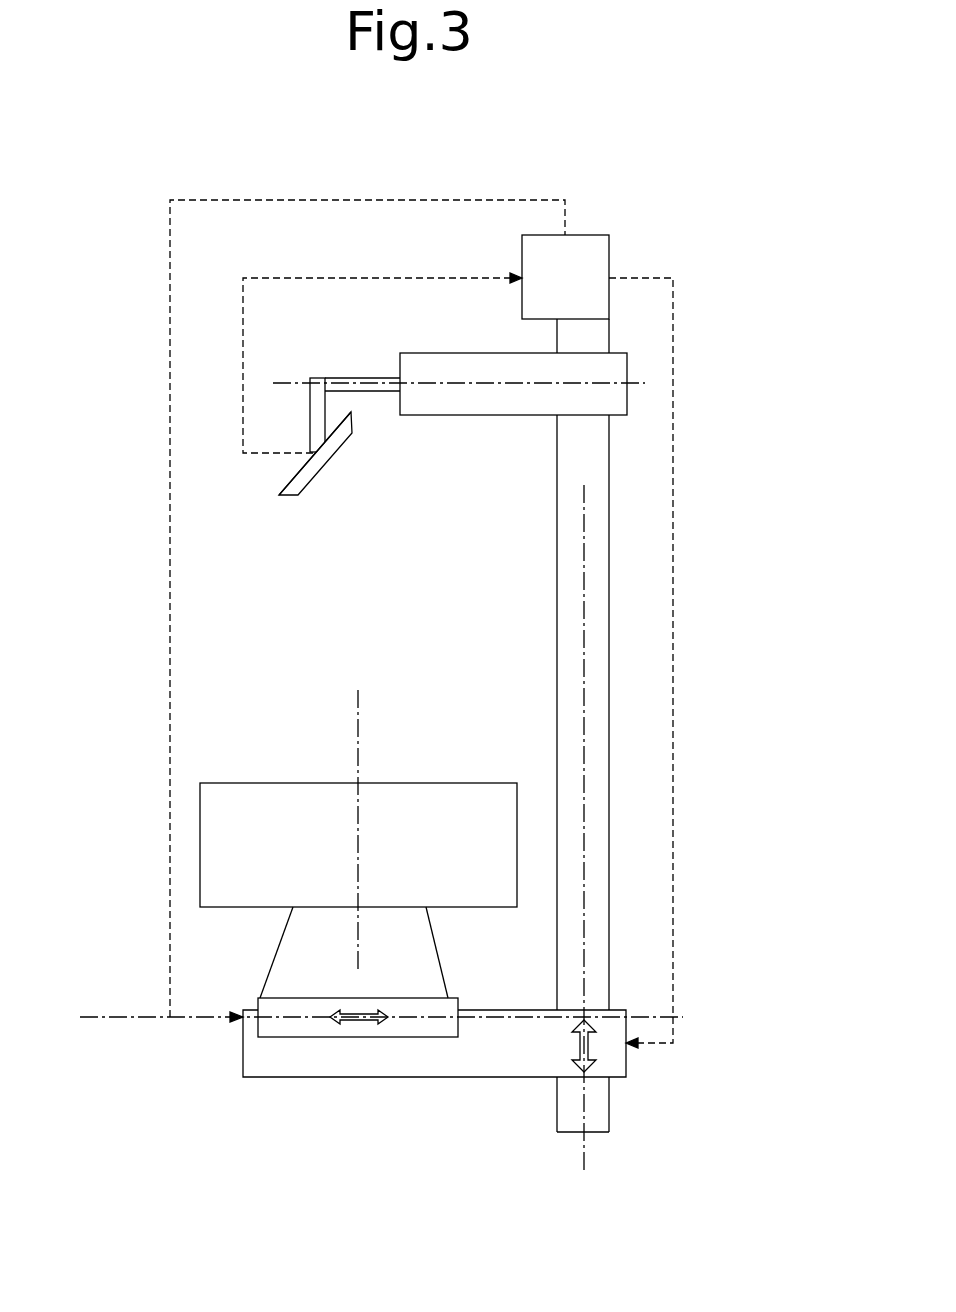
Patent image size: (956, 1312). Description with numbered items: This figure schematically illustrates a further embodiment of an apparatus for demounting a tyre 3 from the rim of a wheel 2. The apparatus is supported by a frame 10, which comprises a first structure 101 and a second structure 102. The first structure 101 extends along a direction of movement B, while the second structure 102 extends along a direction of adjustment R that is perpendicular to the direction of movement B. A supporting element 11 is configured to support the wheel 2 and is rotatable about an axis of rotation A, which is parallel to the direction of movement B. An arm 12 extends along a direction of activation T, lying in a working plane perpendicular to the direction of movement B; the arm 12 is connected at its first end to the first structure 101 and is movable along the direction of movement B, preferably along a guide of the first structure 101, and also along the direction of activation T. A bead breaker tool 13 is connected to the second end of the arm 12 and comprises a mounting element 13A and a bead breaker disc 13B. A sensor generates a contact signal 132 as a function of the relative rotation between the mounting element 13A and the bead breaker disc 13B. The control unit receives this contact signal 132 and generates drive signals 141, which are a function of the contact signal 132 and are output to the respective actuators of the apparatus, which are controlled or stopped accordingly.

The drive signals 141 is at (500, 200).
The contact signal 132 is at (347, 278).
The first structure 101 is at (597, 535).
The direction of movement B is at (585, 1152).
The arm 12 is at (489, 396).
The direction of activation T is at (280, 385).
The mounting element 13A is at (318, 400).
The bead breaker tool 13 is at (347, 451).
The bead breaker disc 13B is at (305, 477).
The tyre 3 is at (218, 800).
The axis of rotation A is at (358, 758).
The wheel 2 is at (236, 827).
The supporting element 11 is at (418, 957).
The second structure 102 is at (320, 1060).
The frame 10 is at (491, 1088).
The direction of adjustment R is at (95, 1019).